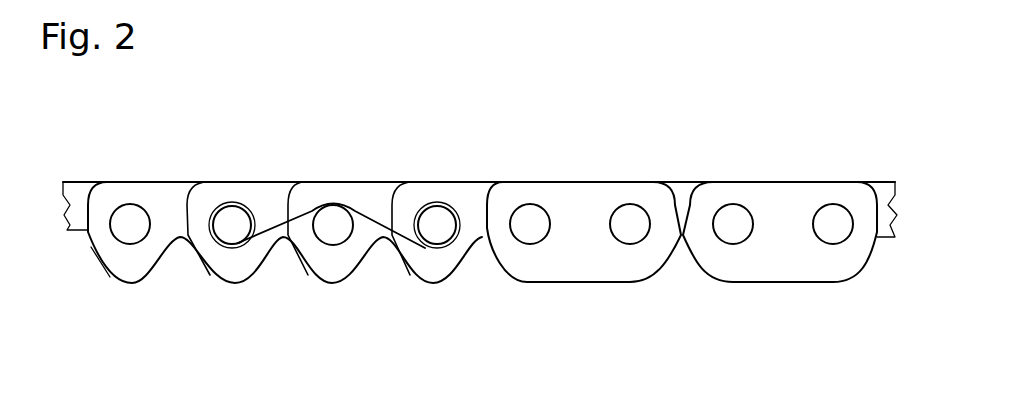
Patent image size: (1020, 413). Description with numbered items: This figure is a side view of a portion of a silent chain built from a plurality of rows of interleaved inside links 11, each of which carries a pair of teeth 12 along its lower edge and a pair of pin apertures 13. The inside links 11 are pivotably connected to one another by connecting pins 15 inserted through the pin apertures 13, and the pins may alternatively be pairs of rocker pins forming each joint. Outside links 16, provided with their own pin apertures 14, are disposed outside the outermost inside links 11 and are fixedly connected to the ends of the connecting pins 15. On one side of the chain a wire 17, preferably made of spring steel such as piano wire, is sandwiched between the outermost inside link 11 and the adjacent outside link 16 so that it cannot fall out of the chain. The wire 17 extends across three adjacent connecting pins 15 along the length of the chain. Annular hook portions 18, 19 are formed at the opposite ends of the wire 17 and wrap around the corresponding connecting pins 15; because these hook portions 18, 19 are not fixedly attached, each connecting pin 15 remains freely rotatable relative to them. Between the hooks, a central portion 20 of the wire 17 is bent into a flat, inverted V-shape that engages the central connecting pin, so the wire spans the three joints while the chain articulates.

The inside link 11 is at (176, 181).
The teeth 12 is at (330, 275).
The pin aperture 13 is at (128, 205).
The pin aperture 14 is at (830, 206).
The connecting pin 15 is at (737, 238).
The outside link 16 is at (780, 180).
The wire 17 is at (304, 211).
The annular hook portion 18 is at (230, 203).
The annular hook portion 19 is at (441, 203).
The central portion 20 is at (334, 204).